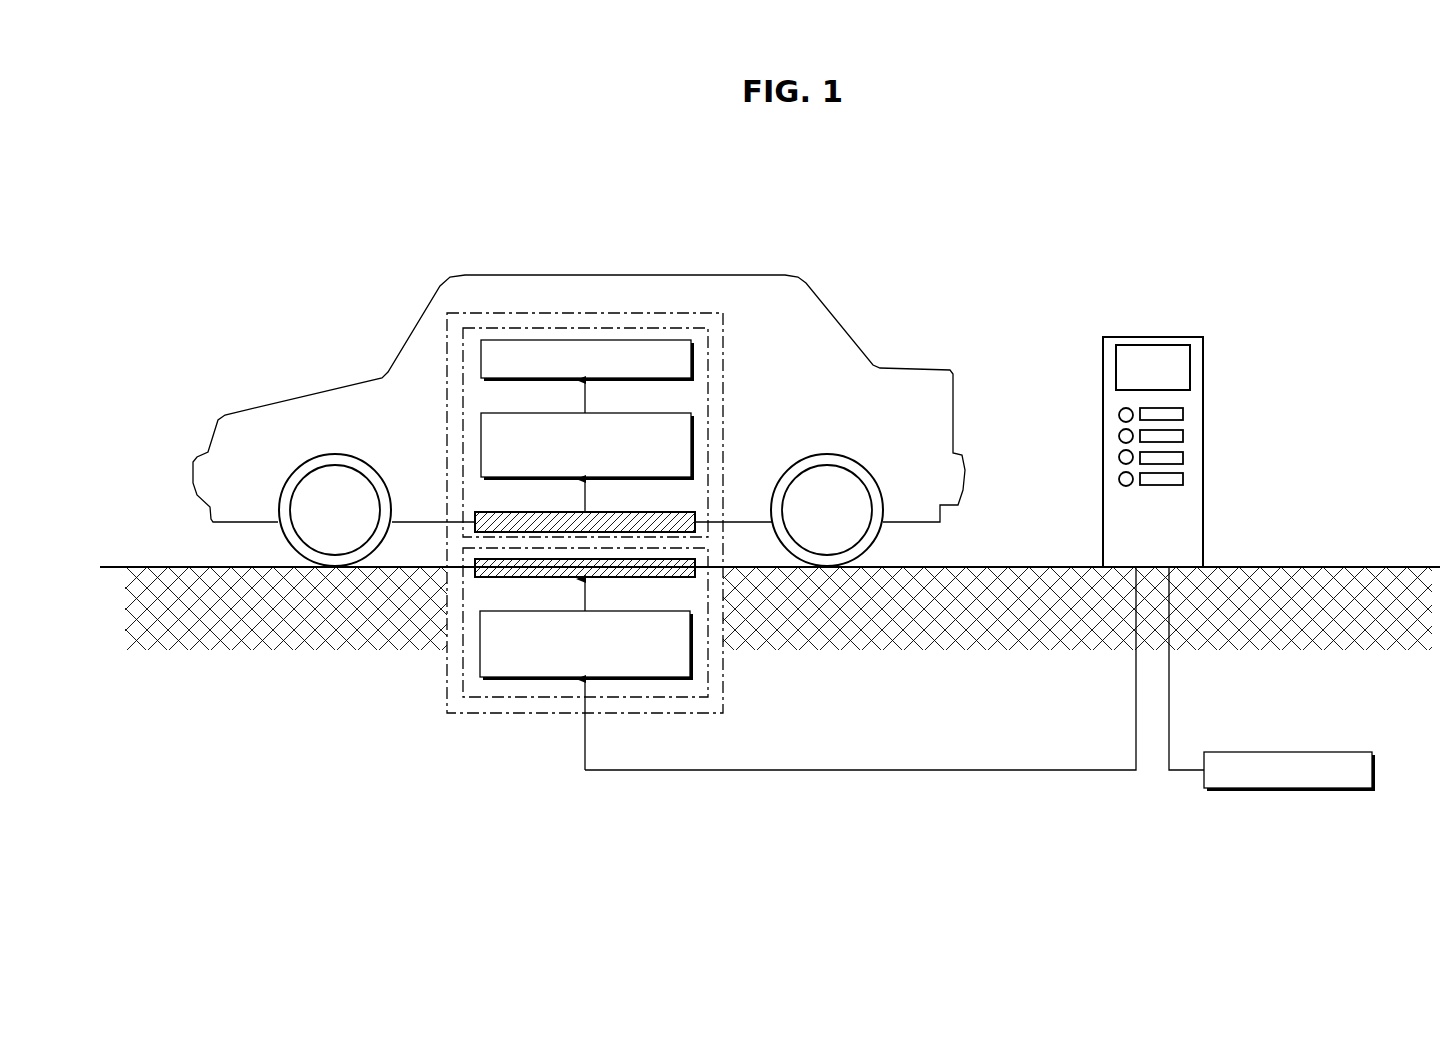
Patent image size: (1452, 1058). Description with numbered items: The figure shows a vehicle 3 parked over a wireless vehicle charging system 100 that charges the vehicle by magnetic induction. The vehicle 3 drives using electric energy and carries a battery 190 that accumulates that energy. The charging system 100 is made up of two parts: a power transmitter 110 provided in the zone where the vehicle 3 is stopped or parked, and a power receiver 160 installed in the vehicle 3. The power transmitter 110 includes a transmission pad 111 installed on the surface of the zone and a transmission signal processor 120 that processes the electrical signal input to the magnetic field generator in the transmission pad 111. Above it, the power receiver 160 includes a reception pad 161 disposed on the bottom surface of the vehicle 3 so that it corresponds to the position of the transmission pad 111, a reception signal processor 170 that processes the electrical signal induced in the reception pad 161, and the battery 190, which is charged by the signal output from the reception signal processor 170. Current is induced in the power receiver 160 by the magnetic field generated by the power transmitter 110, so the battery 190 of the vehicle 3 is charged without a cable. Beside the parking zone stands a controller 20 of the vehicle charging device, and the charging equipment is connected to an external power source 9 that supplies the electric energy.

The vehicle 3 is at (698, 275).
The vehicle charging system 100 is at (557, 310).
The power receiver 160 is at (622, 327).
The battery 190 is at (694, 362).
The reception signal processor 170 is at (694, 451).
The reception pad 161 is at (697, 518).
The power transmitter 110 is at (622, 697).
The transmission pad 111 is at (697, 562).
The transmission signal processor 120 is at (693, 657).
The controller 20 is at (1173, 337).
The external power source 9 is at (1327, 750).